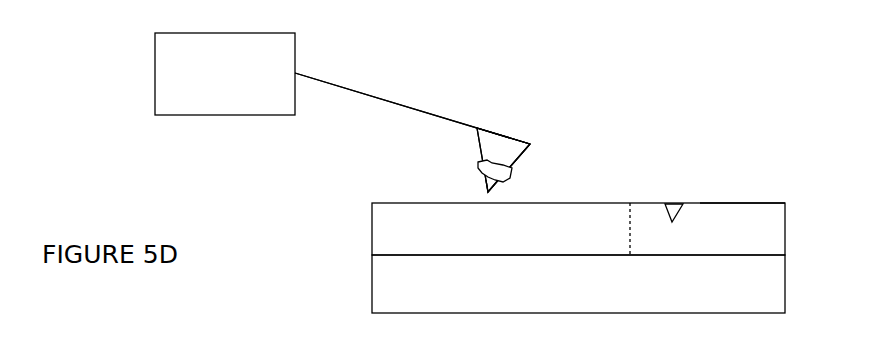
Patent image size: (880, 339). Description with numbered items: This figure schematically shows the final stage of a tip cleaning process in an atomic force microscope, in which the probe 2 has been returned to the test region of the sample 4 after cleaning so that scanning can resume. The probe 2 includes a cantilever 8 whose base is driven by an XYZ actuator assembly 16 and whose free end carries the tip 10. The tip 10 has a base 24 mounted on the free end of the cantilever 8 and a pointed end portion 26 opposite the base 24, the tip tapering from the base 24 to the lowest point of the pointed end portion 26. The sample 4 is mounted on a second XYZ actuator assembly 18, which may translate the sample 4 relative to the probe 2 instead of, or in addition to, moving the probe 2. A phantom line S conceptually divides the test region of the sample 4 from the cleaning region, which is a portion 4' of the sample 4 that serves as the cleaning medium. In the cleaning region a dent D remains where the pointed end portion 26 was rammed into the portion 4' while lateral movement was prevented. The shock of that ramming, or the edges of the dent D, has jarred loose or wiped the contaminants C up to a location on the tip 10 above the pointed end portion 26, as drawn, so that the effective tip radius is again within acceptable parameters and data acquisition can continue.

The XYZ actuator assembly 16 is at (295, 48).
The probe 2 is at (418, 105).
The cantilever 8 is at (352, 90).
The base 24 is at (497, 133).
The tip 10 is at (517, 156).
The pointed end portion 26 is at (492, 189).
The contaminants C is at (478, 165).
The sample 4 is at (550, 229).
The phantom line S is at (631, 224).
The dent D is at (677, 215).
The sample portion 4' is at (747, 183).
The XYZ actuator assembly 18 is at (372, 283).